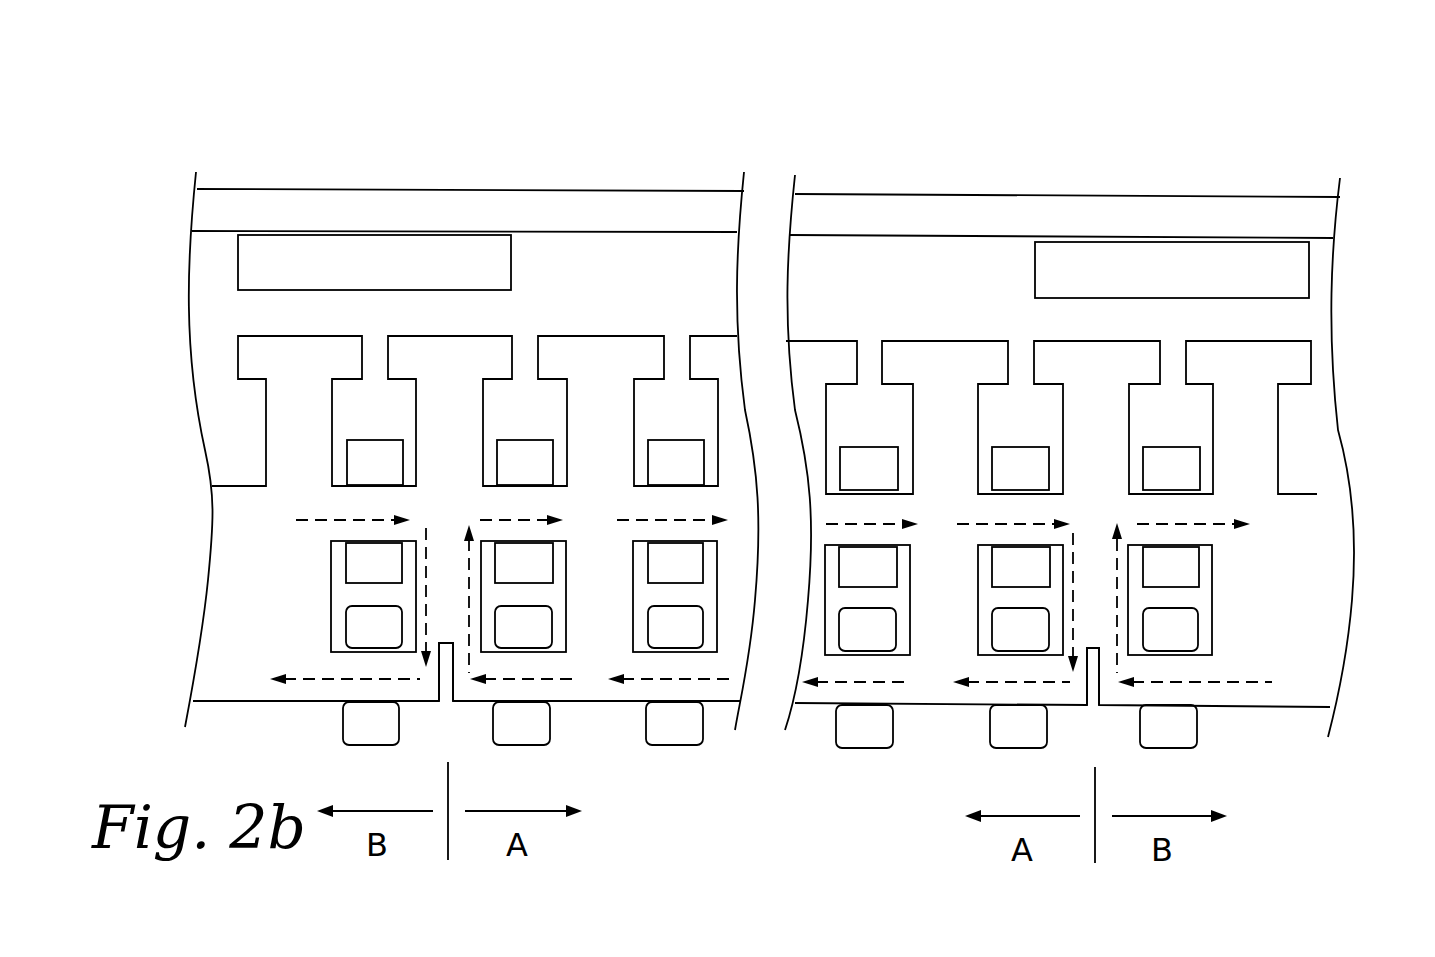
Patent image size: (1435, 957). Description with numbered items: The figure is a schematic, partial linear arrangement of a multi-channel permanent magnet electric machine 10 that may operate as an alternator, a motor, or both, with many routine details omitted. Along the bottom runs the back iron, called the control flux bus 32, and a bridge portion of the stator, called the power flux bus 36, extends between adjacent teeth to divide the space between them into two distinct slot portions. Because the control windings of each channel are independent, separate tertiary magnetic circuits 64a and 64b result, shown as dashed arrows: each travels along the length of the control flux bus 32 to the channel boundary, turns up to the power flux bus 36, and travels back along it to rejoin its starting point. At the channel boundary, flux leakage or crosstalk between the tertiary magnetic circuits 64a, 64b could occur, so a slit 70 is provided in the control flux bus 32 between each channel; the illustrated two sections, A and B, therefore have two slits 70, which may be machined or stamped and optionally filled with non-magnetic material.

The electric machine 10 is at (150, 172).
The control flux bus 32 is at (1317, 645).
The power flux bus 36 is at (1203, 505).
The tertiary magnetic circuit 64a is at (1048, 593).
The tertiary magnetic circuit 64b is at (322, 520).
The slit 70 is at (447, 704).